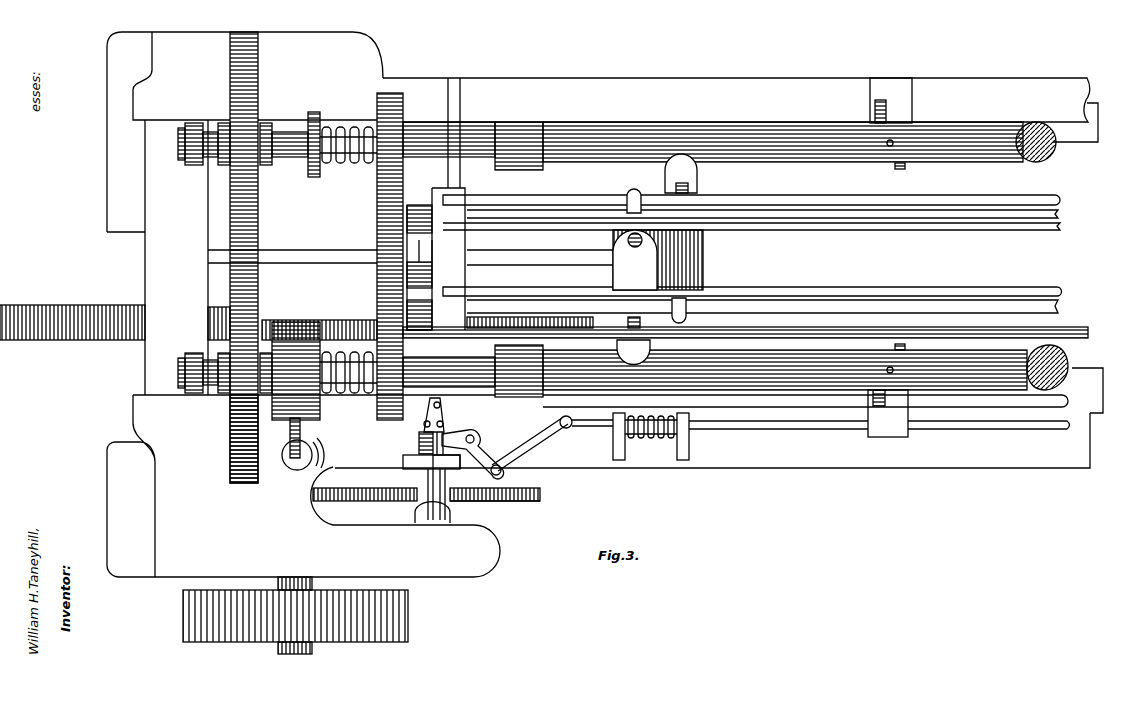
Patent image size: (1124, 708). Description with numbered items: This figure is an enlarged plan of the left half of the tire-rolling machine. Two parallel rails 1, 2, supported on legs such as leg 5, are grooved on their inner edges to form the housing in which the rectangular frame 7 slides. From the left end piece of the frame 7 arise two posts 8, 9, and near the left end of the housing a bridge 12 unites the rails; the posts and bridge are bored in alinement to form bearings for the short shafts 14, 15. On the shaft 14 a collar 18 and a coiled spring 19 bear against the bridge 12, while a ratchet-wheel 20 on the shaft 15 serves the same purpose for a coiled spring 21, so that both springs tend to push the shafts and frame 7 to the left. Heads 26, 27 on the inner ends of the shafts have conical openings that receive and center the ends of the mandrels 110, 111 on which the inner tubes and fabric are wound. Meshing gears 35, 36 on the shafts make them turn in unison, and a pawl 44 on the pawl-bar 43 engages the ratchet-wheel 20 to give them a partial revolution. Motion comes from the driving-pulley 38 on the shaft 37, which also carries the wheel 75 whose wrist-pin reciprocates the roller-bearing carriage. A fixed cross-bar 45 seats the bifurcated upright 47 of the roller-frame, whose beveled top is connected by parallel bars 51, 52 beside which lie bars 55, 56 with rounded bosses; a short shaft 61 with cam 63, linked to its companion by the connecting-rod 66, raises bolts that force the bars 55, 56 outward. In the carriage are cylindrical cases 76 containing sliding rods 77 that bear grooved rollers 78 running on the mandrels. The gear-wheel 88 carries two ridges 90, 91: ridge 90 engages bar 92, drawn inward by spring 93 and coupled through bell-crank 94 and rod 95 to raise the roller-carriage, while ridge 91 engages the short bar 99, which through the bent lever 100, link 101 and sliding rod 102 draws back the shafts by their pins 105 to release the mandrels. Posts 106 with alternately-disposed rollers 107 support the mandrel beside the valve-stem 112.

The rail 1 is at (838, 462).
The rail 2 is at (721, 86).
The leg 5 is at (303, 304).
The rectangular frame 7 is at (1104, 387).
The post 8 is at (193, 166).
The post 9 is at (190, 354).
The bridge 12 is at (377, 236).
The shaft 14 is at (290, 157).
The shaft 15 is at (399, 393).
The collar 18 is at (314, 178).
The coiled spring 19 is at (353, 163).
The ratchet-wheel 20 is at (320, 418).
The coiled spring 21 is at (350, 394).
The head 26 is at (519, 170).
The head 27 is at (515, 398).
The gear 35 is at (258, 60).
The gear 36 is at (230, 459).
The shaft 37 is at (314, 650).
The driving-pulley 38 is at (308, 616).
The pawl-bar 43 is at (318, 452).
The pawl 44 is at (290, 432).
The cross-bar 45 is at (462, 172).
The bifurcated upright 47 is at (448, 259).
The parallel bar 51 is at (786, 204).
The parallel bar 52 is at (804, 198).
The bar 55 is at (765, 221).
The bar 56 is at (804, 208).
The short shaft 61 is at (432, 275).
The cam 63 is at (412, 262).
The connecting-rod 66 is at (745, 327).
The wheel 75 is at (188, 295).
The hollow cylindrical case 76 is at (703, 244).
The sliding rod 77 is at (690, 190).
The grooved roller 78 is at (697, 172).
The gear-wheel 88 is at (365, 503).
The ridge 90 is at (465, 503).
The ridge 91 is at (499, 512).
The bar 92 is at (430, 478).
The spring 93 is at (419, 438).
The bell-crank 94 is at (434, 415).
The rod 95 is at (545, 405).
The short bar 99 is at (446, 478).
The bent lever 100 is at (482, 440).
The link 101 is at (531, 445).
The sliding rod 102 is at (806, 419).
The pin 105 is at (651, 436).
The post 106 is at (890, 257).
The roller 107 is at (913, 347).
The mandrel 110 is at (1046, 143).
The mandrel 111 is at (1069, 366).
The valve-stem 112 is at (886, 147).